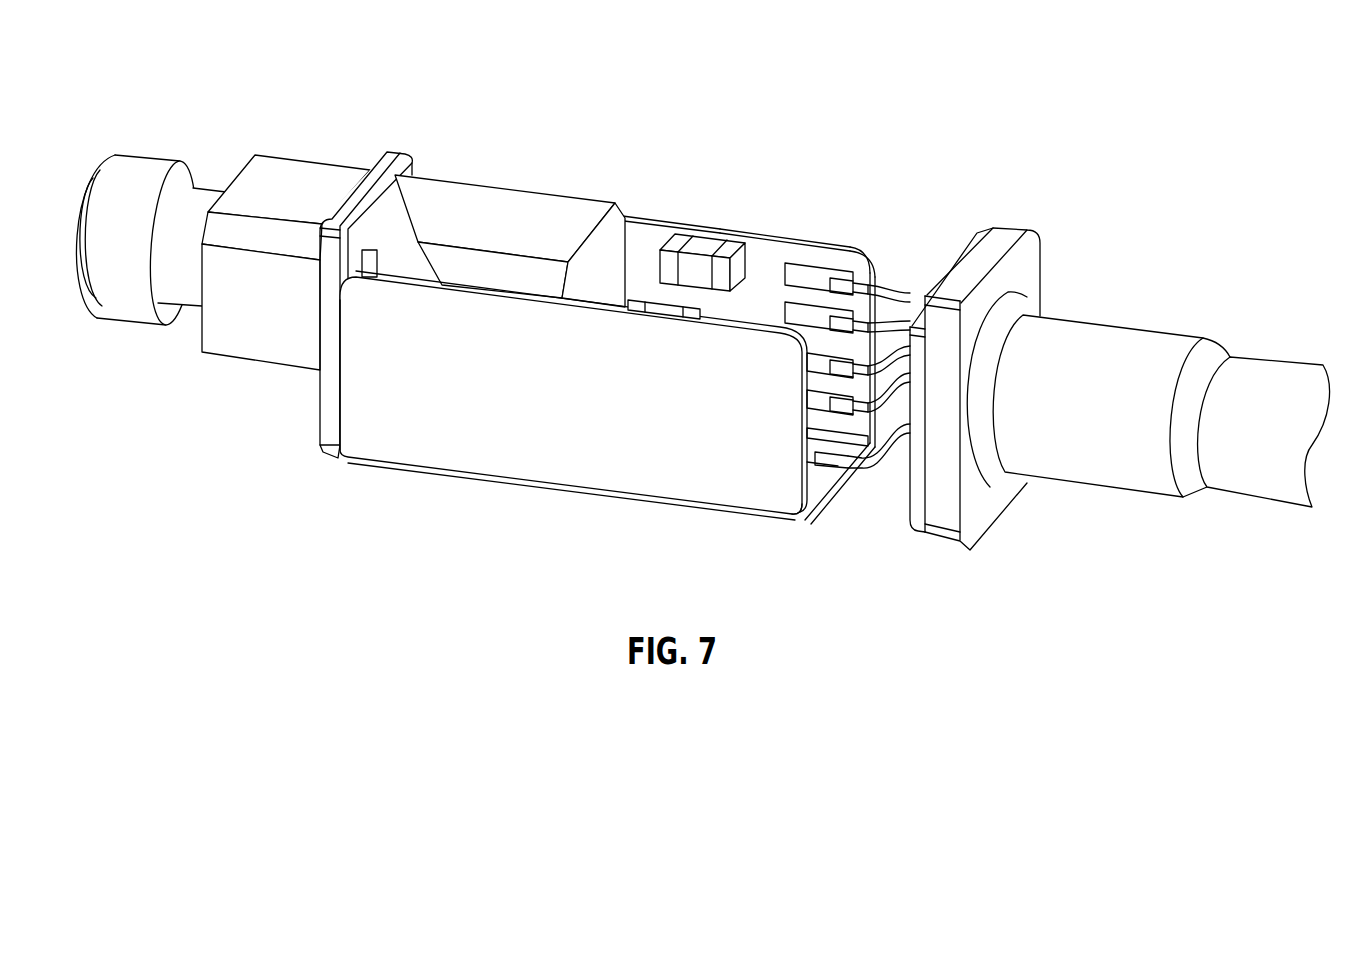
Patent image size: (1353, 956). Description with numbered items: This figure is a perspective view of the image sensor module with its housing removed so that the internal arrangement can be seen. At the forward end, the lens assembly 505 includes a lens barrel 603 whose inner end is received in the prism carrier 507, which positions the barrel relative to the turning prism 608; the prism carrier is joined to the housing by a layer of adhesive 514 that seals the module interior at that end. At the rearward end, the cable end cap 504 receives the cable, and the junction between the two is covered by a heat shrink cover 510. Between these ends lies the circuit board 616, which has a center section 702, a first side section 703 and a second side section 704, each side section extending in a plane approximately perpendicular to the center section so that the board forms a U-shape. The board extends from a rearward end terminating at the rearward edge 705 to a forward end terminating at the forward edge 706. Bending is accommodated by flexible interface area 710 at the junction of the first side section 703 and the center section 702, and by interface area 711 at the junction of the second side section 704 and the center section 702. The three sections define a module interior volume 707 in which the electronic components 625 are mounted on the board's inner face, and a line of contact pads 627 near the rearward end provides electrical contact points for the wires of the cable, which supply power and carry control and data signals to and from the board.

The lens assembly 505 is at (194, 147).
The lens barrel 603 is at (203, 196).
The prism carrier 507 is at (297, 181).
The adhesive 514 is at (388, 160).
The turning prism 608 is at (525, 202).
The module interior volume 707 is at (636, 236).
The electronic components 625 is at (666, 306).
The second side section 704 is at (803, 223).
The circuit board 616 is at (762, 262).
The contact pads 627 is at (810, 462).
The cable end cap 504 is at (1005, 238).
The heat shrink cover 510 is at (1120, 334).
The forward edge 706 is at (337, 430).
The first side section 703 is at (497, 442).
The interface area 710 is at (629, 505).
The center section 702 is at (840, 478).
The rearward edge 705 is at (811, 521).
The interface area 711 is at (872, 441).